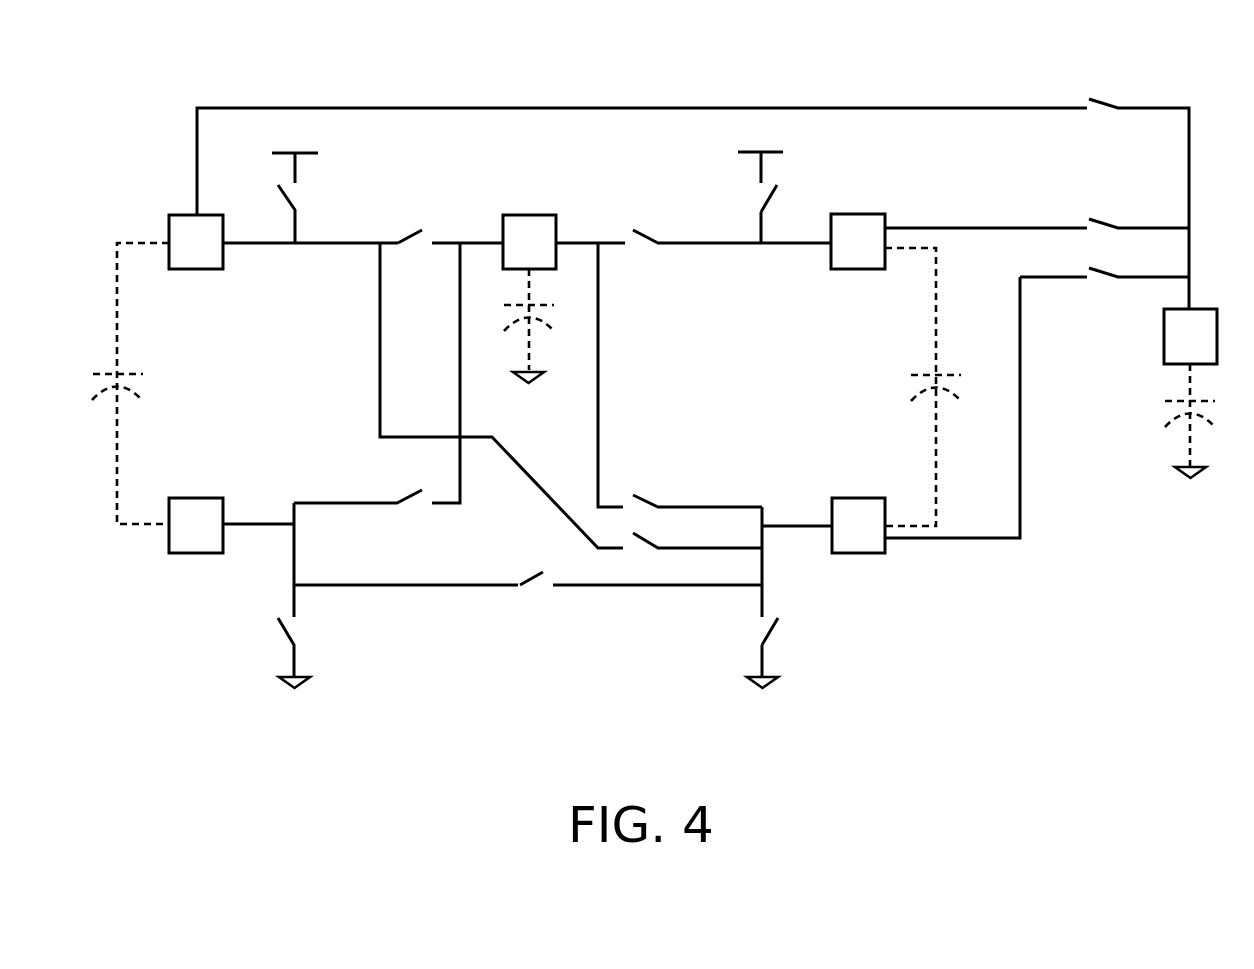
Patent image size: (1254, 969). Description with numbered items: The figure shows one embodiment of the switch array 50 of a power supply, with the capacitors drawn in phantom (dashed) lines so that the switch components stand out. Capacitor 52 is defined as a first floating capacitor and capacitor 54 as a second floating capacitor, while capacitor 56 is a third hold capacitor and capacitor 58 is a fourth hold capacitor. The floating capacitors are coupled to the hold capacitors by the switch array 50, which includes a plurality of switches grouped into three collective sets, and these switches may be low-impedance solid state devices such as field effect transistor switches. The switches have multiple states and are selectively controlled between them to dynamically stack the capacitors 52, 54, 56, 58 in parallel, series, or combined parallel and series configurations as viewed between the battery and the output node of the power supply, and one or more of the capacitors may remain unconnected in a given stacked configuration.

The switch array 50 is at (668, 59).
The first floating capacitor 52 is at (136, 383).
The second floating capacitor 54 is at (941, 387).
The third hold capacitor 56 is at (546, 344).
The fourth hold capacitor 58 is at (1208, 438).